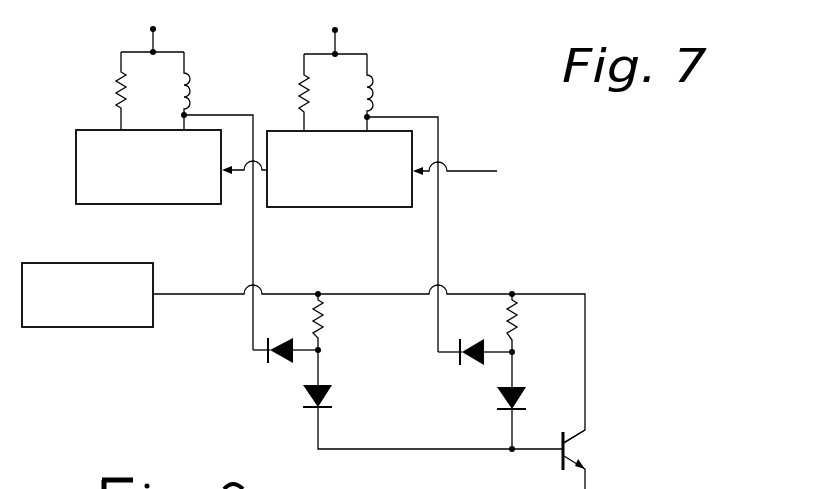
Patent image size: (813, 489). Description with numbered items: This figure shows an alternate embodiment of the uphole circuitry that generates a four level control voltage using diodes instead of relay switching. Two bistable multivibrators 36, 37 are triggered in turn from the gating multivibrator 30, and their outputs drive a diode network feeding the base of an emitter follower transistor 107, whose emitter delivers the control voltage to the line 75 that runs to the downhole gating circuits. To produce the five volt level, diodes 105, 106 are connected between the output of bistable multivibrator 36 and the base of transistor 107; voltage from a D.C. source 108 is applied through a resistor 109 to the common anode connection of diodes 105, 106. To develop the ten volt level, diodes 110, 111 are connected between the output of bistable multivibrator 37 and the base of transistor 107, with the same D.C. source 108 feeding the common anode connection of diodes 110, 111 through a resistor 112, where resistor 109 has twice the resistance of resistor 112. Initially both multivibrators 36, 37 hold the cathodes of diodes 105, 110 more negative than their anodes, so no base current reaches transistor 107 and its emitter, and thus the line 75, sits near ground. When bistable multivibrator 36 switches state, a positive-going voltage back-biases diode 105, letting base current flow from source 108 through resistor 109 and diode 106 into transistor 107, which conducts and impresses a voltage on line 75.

The gating multivibrator 30 is at (726, 207).
The bistable multivibrator 36 is at (352, 209).
The bistable multivibrator 37 is at (170, 206).
The line 75 is at (665, 475).
The diode 105 is at (473, 337).
The diode 106 is at (498, 395).
The emitter follower transistor 107 is at (562, 443).
The D.C. source 108 is at (97, 328).
The resistor 109 is at (520, 320).
The diode 110 is at (285, 337).
The diode 111 is at (330, 383).
The resistor 112 is at (325, 332).